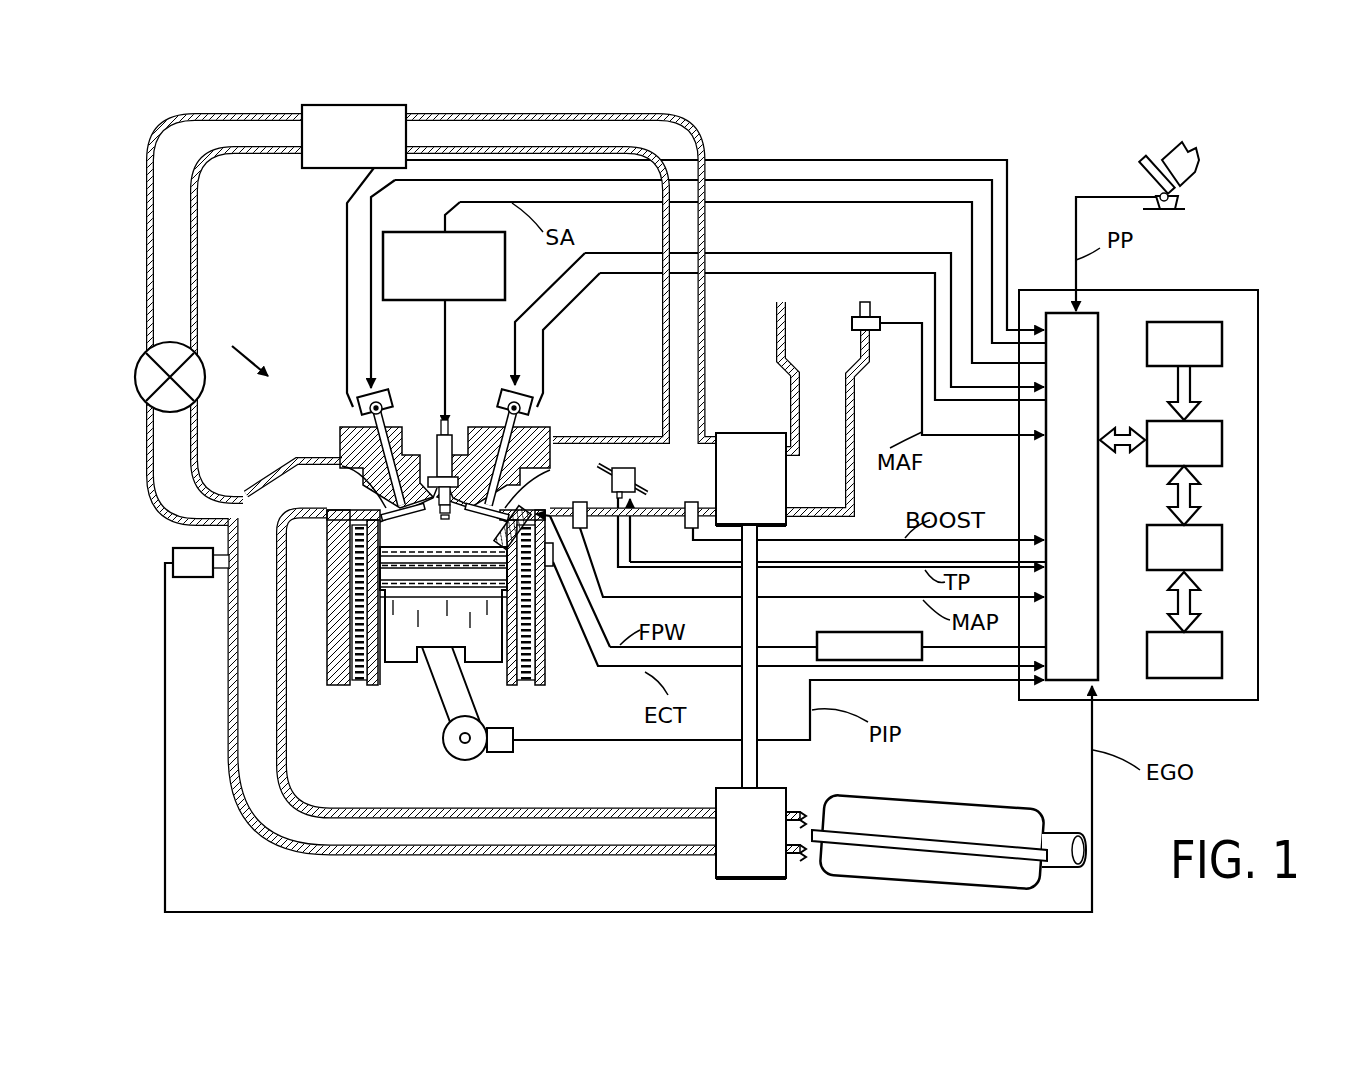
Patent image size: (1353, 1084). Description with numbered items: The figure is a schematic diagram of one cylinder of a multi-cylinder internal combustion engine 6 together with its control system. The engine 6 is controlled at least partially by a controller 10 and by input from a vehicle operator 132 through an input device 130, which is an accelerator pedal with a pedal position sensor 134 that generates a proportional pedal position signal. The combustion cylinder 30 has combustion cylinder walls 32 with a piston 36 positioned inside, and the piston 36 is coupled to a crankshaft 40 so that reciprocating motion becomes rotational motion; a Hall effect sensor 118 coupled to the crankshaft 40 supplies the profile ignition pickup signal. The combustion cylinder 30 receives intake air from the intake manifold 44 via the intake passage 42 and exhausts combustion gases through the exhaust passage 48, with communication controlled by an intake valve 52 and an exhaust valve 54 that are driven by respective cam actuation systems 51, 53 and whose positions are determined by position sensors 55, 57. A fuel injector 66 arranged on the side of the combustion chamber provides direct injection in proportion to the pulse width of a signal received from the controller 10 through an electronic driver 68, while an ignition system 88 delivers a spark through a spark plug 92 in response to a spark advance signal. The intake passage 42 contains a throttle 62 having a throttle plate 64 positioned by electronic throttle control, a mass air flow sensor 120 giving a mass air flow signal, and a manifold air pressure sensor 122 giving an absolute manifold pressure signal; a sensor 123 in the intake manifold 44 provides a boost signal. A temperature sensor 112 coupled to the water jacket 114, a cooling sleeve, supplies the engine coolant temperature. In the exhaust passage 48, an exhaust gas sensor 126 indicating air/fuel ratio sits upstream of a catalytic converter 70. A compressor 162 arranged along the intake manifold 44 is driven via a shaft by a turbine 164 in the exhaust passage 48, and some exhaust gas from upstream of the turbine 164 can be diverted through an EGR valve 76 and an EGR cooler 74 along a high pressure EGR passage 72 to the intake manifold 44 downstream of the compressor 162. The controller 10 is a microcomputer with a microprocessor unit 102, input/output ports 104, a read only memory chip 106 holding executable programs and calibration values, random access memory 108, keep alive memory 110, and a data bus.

The internal combustion engine 6 is at (395, 561).
The controller 10 is at (1185, 480).
The combustion cylinder 30 is at (440, 530).
The combustion cylinder walls 32 is at (383, 675).
The piston 36 is at (425, 635).
The crankshaft 40 is at (455, 758).
The intake passage 42 is at (820, 370).
The intake manifold 44 is at (545, 487).
The exhaust passage 48 is at (338, 487).
The cam actuation system 51 is at (500, 393).
The intake valve 52 is at (459, 478).
The cam actuation system 53 is at (387, 393).
The exhaust valve 54 is at (337, 457).
The position sensor 55 is at (536, 414).
The position sensor 57 is at (350, 412).
The throttle 62 is at (628, 465).
The throttle plate 64 is at (614, 468).
The fuel injector 66 is at (508, 522).
The electronic driver 68 is at (852, 632).
The catalytic converter 70 is at (1000, 810).
The EGR passage 72 is at (572, 113).
The EGR cooler 74 is at (357, 105).
The EGR valve 76 is at (140, 366).
The ignition system 88 is at (398, 232).
The spark plug 92 is at (441, 465).
The microprocessor unit 102 is at (1224, 436).
The input/output ports 104 is at (1100, 322).
The read only memory chip 106 is at (1224, 344).
The random access memory 108 is at (1224, 545).
The keep alive memory 110 is at (1224, 650).
The temperature sensor 112 is at (556, 570).
The water jacket 114 is at (528, 640).
The Hall effect sensor 118 is at (500, 754).
The mass air flow sensor 120 is at (880, 318).
The manifold air pressure sensor 122 is at (582, 535).
The boost sensor 123 is at (688, 529).
The exhaust gas sensor 126 is at (175, 553).
The input device 130 is at (1198, 176).
The vehicle operator 132 is at (1196, 156).
The pedal position sensor 134 is at (1180, 203).
The compressor 162 is at (744, 433).
The turbine 164 is at (716, 860).